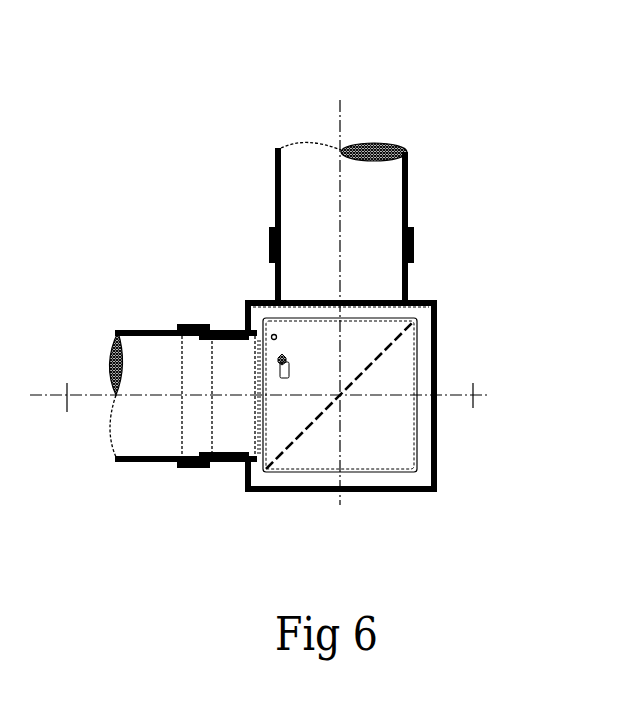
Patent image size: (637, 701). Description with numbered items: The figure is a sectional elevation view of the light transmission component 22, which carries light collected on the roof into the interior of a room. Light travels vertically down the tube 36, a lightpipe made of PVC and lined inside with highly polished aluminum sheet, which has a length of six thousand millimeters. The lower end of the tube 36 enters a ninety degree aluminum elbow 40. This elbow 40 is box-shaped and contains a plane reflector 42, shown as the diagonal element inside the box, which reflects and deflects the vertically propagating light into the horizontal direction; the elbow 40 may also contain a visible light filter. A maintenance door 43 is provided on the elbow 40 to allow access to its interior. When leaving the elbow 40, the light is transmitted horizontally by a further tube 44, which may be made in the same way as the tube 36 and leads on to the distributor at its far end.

The light transmission component 22 is at (150, 135).
The tube 36 is at (410, 187).
The elbow 40 is at (462, 372).
The plane reflector 42 is at (329, 396).
The maintenance door 43 is at (272, 333).
The further tube 44 is at (135, 330).